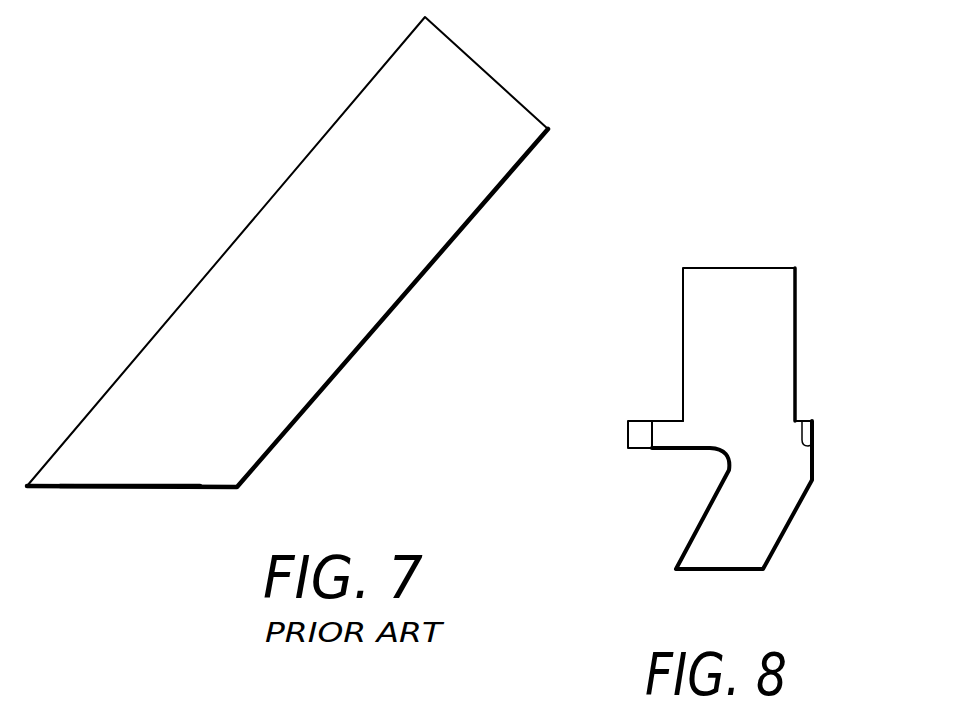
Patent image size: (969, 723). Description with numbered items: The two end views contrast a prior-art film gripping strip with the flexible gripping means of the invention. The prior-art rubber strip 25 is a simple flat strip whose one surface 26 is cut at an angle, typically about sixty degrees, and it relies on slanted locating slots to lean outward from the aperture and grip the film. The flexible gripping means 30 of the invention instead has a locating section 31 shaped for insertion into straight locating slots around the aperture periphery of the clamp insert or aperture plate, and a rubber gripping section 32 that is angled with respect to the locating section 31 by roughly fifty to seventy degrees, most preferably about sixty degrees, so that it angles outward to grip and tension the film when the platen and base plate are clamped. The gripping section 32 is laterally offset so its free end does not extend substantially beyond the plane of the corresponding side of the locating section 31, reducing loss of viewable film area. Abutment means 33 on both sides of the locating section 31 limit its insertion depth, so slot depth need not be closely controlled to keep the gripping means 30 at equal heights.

In FIG. 7, the rubber strip 25 is at (238, 174).
In FIG. 7, the angled surface 26 is at (128, 489).
In FIG. 8, the flexible gripping means 30 is at (709, 393).
In FIG. 8, the locating section 31 is at (743, 288).
In FIG. 8, the gripping section 32 is at (763, 533).
In FIG. 8, the abutment means 33 is at (652, 448).